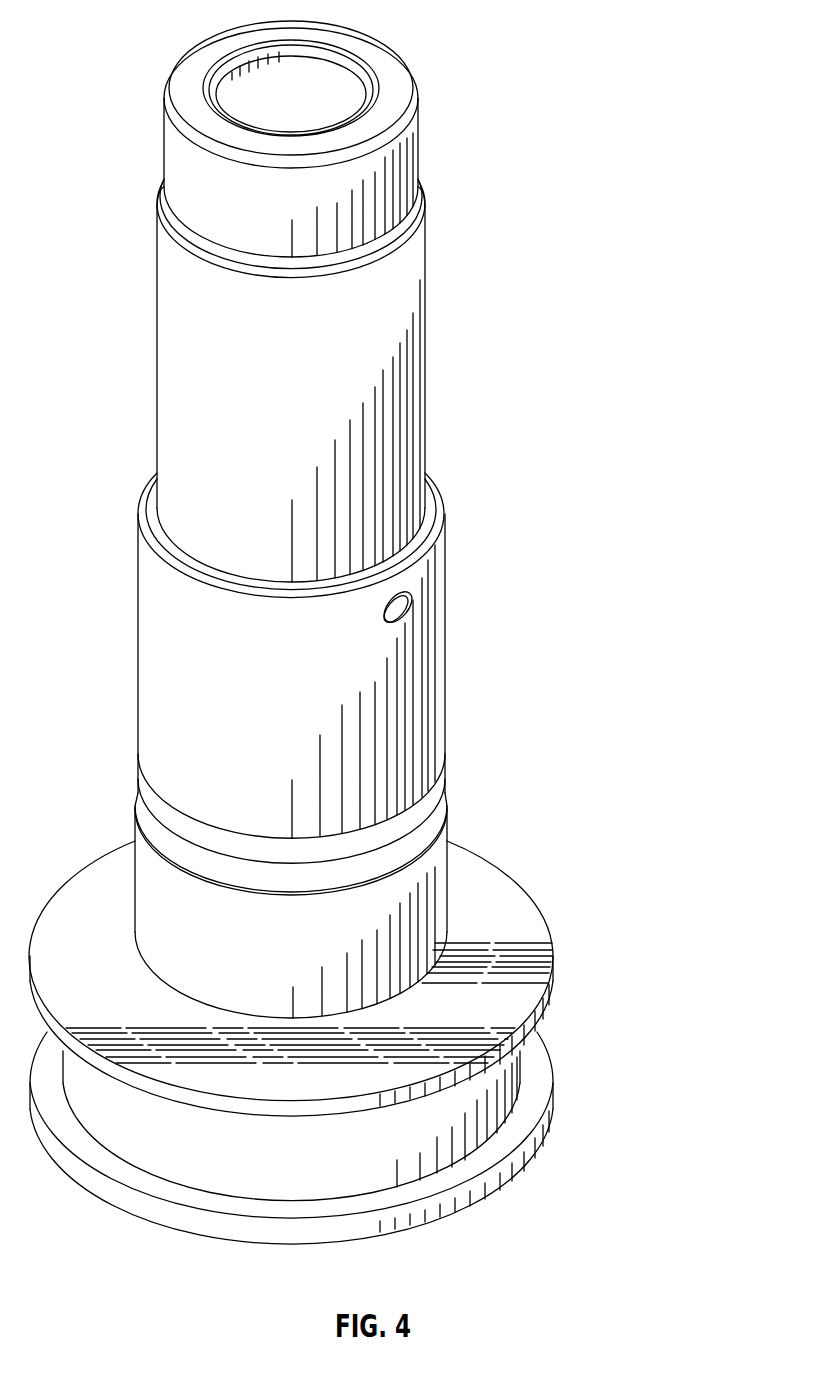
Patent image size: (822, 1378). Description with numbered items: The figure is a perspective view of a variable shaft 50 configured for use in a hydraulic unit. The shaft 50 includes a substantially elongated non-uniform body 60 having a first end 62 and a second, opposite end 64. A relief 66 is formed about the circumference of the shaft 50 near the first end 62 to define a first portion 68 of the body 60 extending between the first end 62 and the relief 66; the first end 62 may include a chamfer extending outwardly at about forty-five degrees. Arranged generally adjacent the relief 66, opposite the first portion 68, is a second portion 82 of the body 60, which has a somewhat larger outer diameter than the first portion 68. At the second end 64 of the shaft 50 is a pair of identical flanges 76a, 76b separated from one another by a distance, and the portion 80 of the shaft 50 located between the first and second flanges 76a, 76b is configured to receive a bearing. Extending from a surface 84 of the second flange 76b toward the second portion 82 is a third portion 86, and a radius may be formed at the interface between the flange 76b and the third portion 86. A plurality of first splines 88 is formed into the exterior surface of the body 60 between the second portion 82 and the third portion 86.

The variable shaft 50 is at (660, 62).
The first end 62 is at (207, 42).
The first portion 68 is at (402, 162).
The relief 66 is at (410, 222).
The second portion 82 is at (388, 320).
The body 60 is at (138, 640).
The first splines 88 is at (403, 675).
The third portion 86 is at (433, 865).
The surface 84 is at (515, 892).
The second flange 76b is at (557, 983).
The portion 80 is at (502, 1082).
The first flange 76a is at (560, 1108).
The second end 64 is at (355, 1252).